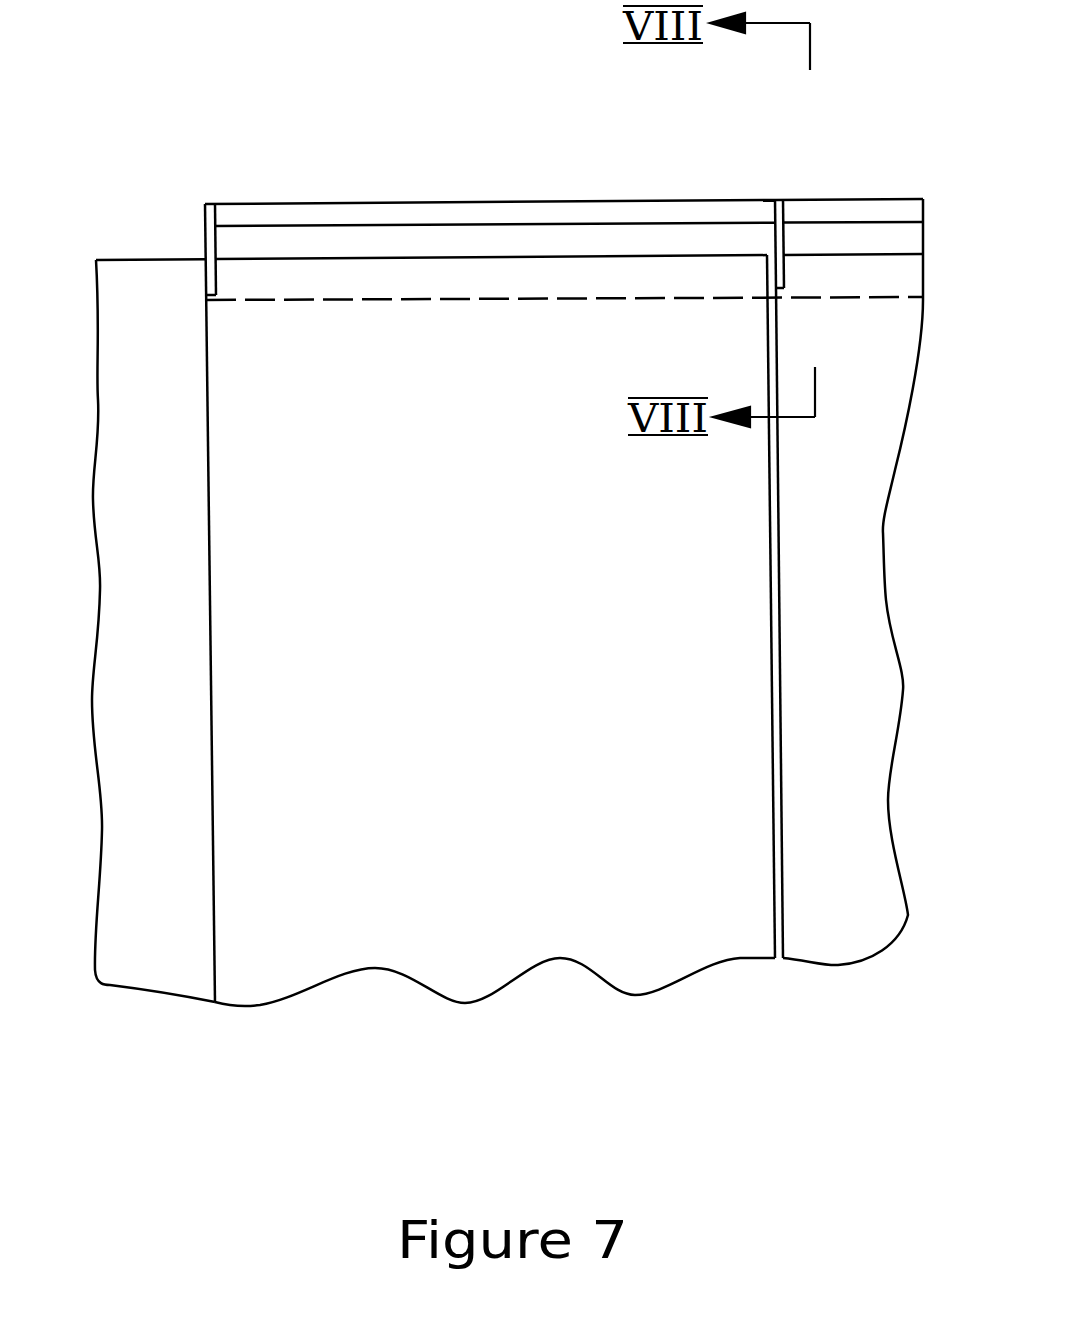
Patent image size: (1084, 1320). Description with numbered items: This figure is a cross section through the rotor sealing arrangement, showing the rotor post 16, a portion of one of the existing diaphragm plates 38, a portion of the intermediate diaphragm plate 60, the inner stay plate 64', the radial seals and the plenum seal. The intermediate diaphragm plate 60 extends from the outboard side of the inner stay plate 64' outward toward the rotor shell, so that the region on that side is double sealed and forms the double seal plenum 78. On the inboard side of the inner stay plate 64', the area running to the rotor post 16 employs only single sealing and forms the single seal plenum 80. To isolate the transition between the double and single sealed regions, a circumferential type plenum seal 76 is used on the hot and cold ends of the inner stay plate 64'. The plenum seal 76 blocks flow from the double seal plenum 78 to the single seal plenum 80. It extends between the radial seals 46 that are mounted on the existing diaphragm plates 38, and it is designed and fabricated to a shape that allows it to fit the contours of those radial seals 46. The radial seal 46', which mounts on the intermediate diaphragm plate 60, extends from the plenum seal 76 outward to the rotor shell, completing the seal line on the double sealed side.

The rotor post 16 is at (193, 569).
The existing diaphragm plate 38 is at (487, 566).
The intermediate diaphragm plate 60 is at (843, 563).
The inner stay plate 64' is at (729, 606).
The single seal plenum 80 is at (326, 95).
The double seal plenum 78 is at (877, 92).
The radial seal 46 is at (495, 172).
The radial seal 46' is at (880, 172).
The plenum seal 76 is at (784, 212).